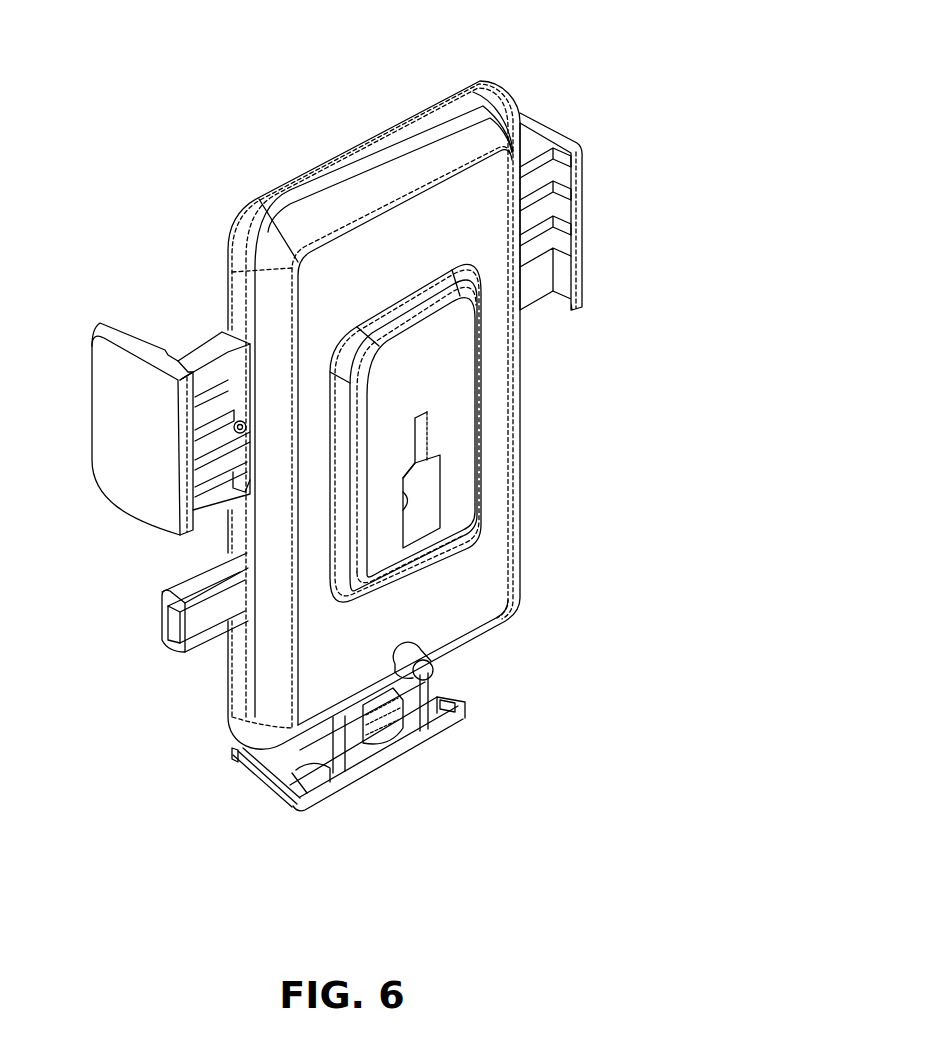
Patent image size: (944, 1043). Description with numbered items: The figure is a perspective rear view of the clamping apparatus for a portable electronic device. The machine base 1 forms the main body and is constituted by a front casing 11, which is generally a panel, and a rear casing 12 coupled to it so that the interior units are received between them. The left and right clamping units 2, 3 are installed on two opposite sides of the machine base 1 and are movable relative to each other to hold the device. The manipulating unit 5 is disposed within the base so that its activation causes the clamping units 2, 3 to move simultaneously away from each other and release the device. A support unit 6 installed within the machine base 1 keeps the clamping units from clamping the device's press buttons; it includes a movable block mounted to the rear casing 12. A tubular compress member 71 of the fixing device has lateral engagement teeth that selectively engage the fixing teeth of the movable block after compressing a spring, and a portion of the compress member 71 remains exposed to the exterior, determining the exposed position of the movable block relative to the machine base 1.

The machine base 1 is at (383, 57).
The front casing 11 is at (328, 160).
The rear casing 12 is at (371, 188).
The left clamping unit 2 is at (550, 137).
The right clamping unit 3 is at (102, 415).
The manipulating unit 5 is at (160, 632).
The support unit 6 is at (255, 788).
The compress member 71 is at (440, 657).